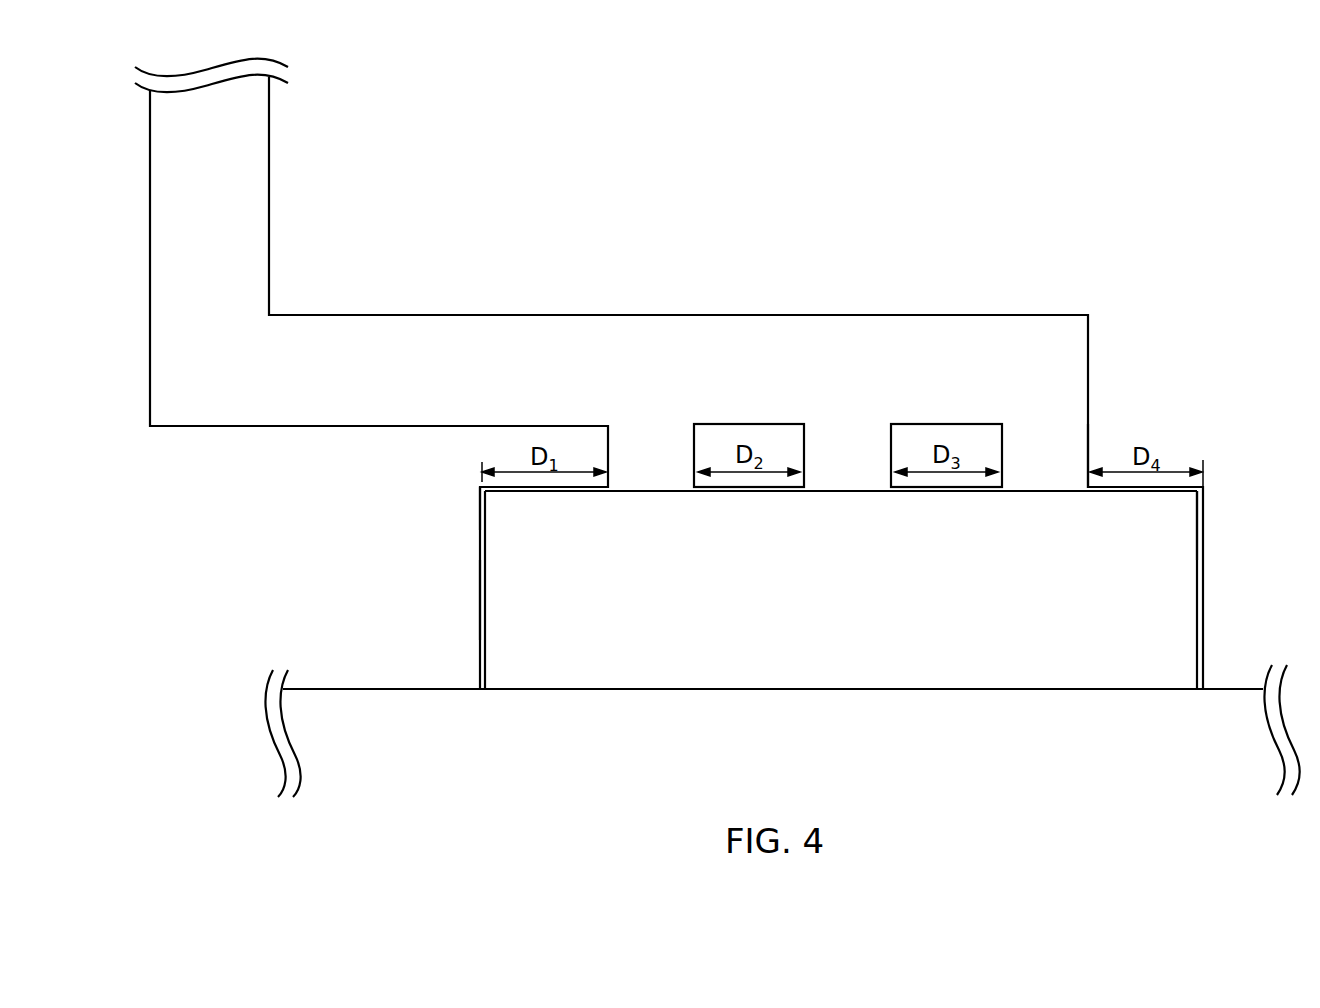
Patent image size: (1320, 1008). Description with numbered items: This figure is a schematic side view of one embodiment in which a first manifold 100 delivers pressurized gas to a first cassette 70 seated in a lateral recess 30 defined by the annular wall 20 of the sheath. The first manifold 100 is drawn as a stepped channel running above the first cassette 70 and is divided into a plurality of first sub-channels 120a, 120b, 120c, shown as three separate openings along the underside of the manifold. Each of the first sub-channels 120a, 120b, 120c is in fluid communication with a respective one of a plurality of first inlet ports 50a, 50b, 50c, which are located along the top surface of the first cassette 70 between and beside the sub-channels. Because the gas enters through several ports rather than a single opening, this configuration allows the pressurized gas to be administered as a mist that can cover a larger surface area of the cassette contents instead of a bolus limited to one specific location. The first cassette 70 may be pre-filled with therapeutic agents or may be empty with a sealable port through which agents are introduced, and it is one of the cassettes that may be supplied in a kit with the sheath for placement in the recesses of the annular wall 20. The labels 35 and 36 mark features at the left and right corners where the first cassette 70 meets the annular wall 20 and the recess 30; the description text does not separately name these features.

The first manifold 100 is at (517, 299).
The annular wall 20 is at (480, 592).
The lateral recess 30 is at (1203, 487).
The substrate corner / edge 35 is at (480, 488).
The substrate corner / edge 36 is at (1203, 483).
The first cassette 70 is at (856, 611).
The first sub-channel 120a is at (650, 447).
The first sub-channel 120b is at (853, 447).
The first sub-channel 120c is at (1057, 447).
The first inlet port 50a is at (638, 478).
The first inlet port 50b is at (833, 478).
The first inlet port 50c is at (1038, 478).